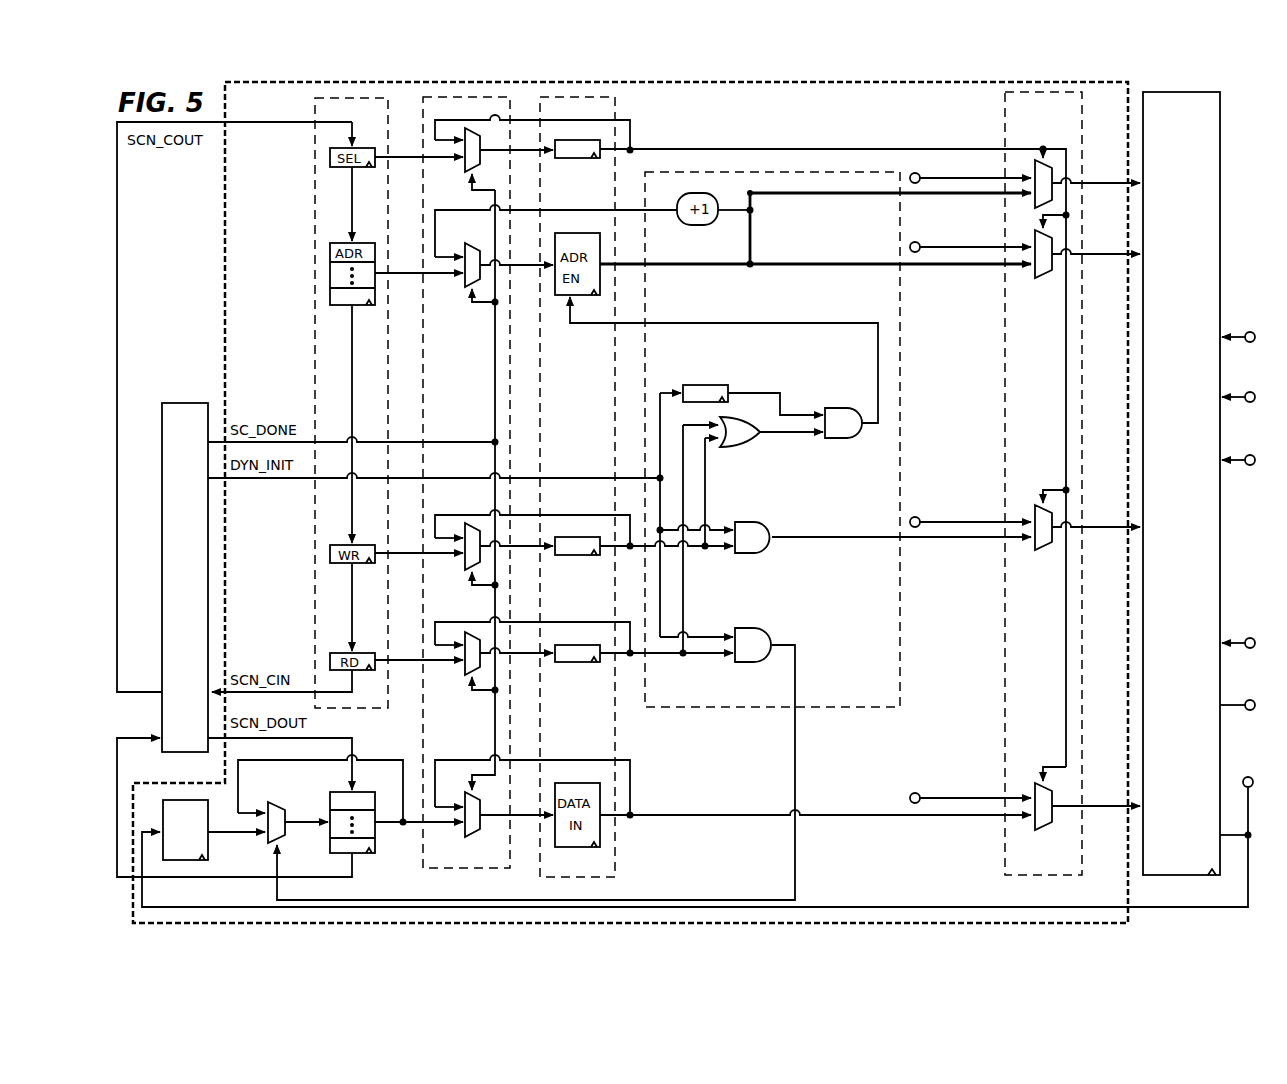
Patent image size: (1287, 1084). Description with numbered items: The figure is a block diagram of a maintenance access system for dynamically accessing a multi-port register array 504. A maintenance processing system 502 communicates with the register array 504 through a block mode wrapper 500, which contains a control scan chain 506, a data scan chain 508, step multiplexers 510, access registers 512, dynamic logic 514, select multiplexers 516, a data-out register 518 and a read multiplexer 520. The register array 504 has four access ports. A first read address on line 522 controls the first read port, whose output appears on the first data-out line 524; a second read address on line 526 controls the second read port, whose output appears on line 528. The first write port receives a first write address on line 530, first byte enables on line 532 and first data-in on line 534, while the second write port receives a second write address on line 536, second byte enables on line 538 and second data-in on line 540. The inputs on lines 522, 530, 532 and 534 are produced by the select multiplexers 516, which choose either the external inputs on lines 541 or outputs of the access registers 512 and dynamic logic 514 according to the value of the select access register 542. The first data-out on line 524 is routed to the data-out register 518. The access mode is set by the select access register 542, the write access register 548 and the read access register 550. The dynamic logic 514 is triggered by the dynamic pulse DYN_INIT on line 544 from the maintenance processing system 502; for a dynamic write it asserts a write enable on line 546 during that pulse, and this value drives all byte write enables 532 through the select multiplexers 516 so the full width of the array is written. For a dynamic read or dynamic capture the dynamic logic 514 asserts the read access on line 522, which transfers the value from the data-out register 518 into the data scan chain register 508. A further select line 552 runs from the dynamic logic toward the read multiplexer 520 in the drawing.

The block mode wrapper 500 is at (224, 196).
The maintenance processing system 502 is at (195, 403).
The register array 504 is at (1178, 876).
The control scan chain 506 is at (350, 710).
The data scan chain 508 is at (357, 855).
The step multiplexers 510 is at (445, 870).
The access registers 512 is at (616, 835).
The dynamic logic 514 is at (690, 708).
The select multiplexers 516 is at (1003, 845).
The data-out register 518 is at (210, 838).
The read multiplexer 520 is at (273, 800).
The first read address line 522 is at (1086, 252).
The first data-out line 524 is at (885, 905).
The second read address line 526 is at (1241, 638).
The second data-out line 528 is at (1241, 700).
The first write address line 530 is at (1086, 181).
The first byte enables line 532 is at (1086, 526).
The first data-in line 534 is at (1086, 804).
The second write address line 536 is at (1241, 332).
The second byte enables line 538 is at (1241, 392).
The second data-in line 540 is at (1241, 455).
The external input lines 541 is at (911, 173).
The select access register 542 is at (575, 160).
The dynamic pulse line 544 is at (240, 480).
The write enable line 546 is at (812, 535).
The write access register 548 is at (575, 557).
The read access register 550 is at (575, 664).
The select signal line 552 is at (730, 898).